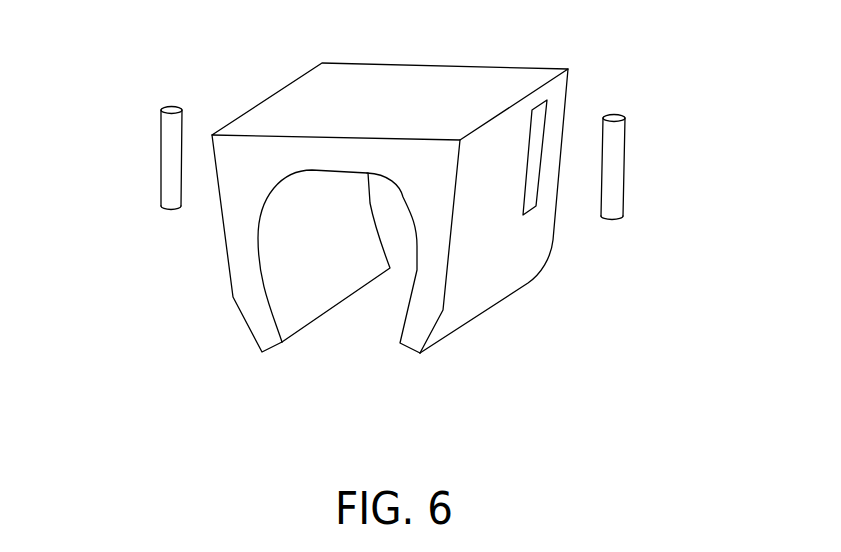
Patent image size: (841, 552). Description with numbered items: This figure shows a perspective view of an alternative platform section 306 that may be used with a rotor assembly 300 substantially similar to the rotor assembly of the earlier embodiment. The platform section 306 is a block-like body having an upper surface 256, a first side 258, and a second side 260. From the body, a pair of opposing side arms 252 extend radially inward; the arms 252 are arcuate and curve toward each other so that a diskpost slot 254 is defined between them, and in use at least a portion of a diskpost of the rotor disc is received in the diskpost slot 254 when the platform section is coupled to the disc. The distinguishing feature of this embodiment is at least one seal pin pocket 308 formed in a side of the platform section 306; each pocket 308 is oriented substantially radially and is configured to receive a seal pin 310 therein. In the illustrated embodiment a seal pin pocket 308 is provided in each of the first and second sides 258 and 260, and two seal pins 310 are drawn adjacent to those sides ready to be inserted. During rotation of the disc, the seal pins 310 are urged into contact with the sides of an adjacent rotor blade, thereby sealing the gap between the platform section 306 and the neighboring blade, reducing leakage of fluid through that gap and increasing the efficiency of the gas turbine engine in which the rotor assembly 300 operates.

The rotor assembly 300 is at (416, 223).
The upper surface 256 is at (497, 72).
The first side 258 is at (238, 243).
The second side 260 is at (511, 246).
The side arms 252 is at (252, 278).
The diskpost slot 254 is at (357, 327).
The platform section 306 is at (522, 357).
The seal pin pocket 308 is at (530, 197).
The seal pin 310 is at (168, 135).